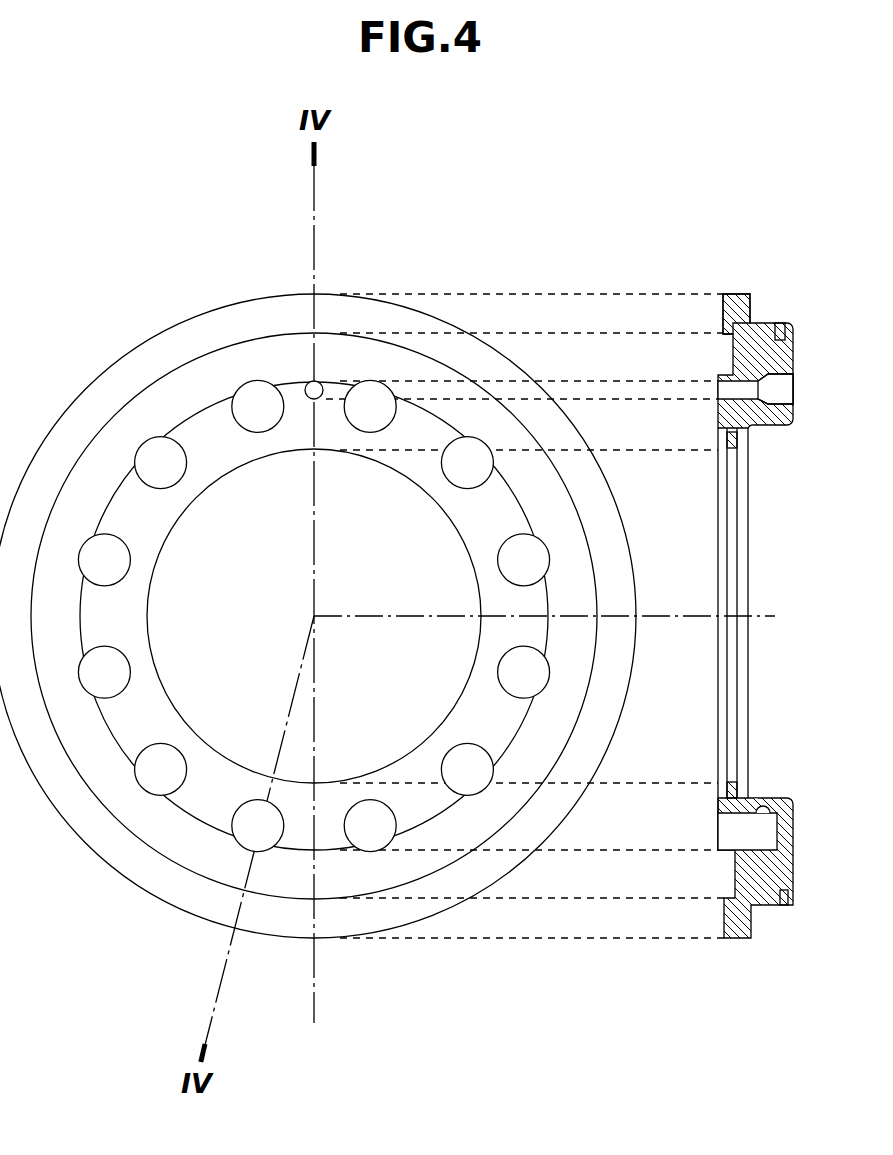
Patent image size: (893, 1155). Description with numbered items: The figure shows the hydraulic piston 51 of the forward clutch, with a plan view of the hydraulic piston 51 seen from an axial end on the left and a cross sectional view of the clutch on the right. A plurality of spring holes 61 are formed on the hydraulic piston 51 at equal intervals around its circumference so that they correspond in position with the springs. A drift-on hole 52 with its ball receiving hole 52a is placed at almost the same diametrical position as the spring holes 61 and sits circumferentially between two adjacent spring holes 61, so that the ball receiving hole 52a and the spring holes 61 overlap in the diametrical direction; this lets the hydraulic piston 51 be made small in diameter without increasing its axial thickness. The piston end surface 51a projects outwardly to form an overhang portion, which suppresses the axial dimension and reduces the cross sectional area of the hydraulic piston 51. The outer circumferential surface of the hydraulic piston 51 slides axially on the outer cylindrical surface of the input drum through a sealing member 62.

The hydraulic piston 51 is at (738, 294).
The piston end surface 51a is at (723, 315).
The drift-on hole 52 is at (303, 385).
The ball receiving hole 52a is at (787, 385).
The spring holes 61 is at (143, 444).
The sealing member 62 is at (780, 323).